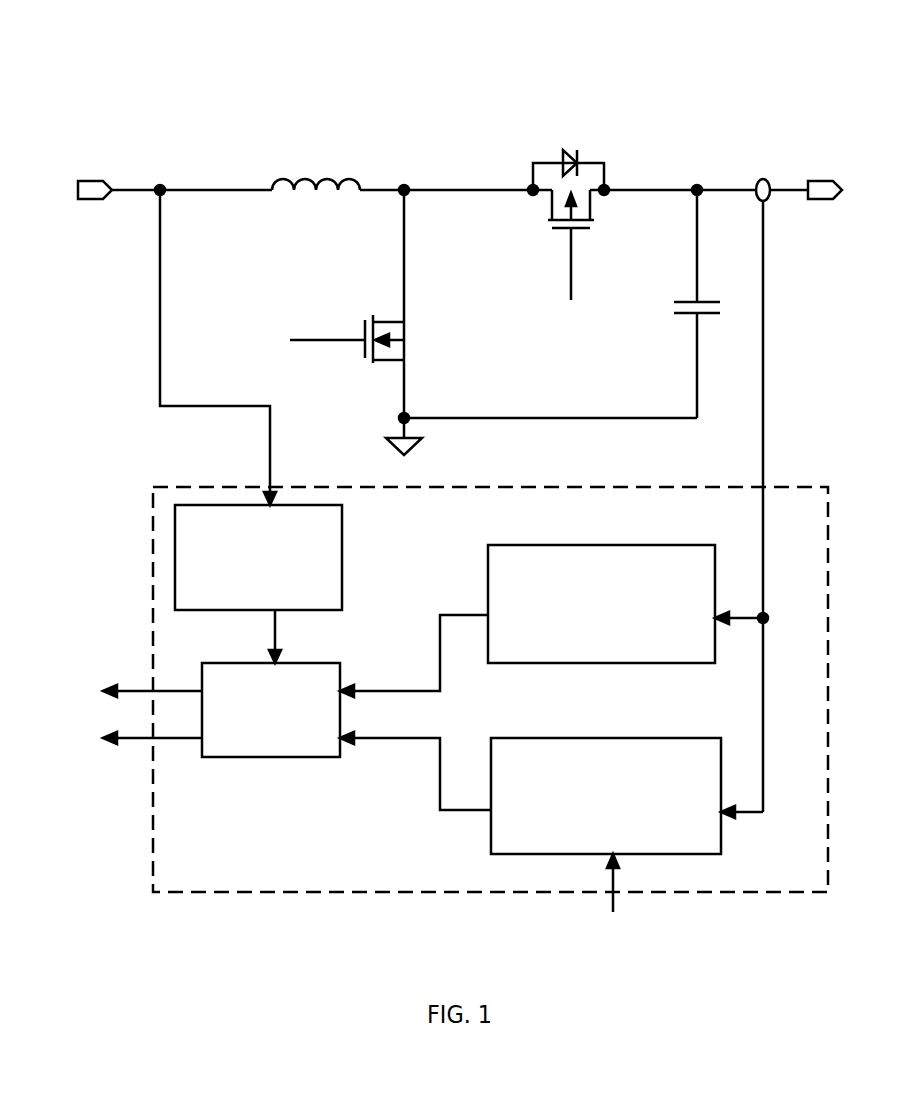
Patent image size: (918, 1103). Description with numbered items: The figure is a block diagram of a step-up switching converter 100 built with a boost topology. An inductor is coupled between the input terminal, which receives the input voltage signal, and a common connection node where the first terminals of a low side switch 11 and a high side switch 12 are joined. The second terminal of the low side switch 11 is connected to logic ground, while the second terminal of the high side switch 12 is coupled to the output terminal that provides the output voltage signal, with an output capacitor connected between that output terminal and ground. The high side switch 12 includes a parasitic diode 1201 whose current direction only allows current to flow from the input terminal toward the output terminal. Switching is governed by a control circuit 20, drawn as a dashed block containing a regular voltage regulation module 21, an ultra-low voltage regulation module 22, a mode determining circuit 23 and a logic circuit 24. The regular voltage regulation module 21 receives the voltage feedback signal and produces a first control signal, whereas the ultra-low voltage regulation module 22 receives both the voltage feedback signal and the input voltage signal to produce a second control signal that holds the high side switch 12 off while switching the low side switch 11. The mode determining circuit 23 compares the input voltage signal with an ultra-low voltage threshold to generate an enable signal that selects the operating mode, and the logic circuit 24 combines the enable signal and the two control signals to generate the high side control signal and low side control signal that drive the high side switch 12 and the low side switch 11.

The step-up switching converter 100 is at (747, 79).
The parasitic diode 1201 is at (568, 158).
The high side switch 12 is at (543, 208).
The low side switch 11 is at (412, 347).
The control circuit 20 is at (812, 487).
The regular voltage regulation module 21 is at (636, 545).
The ultra-low voltage regulation module 22 is at (655, 738).
The mode determining circuit 23 is at (342, 567).
The logic circuit 24 is at (290, 757).